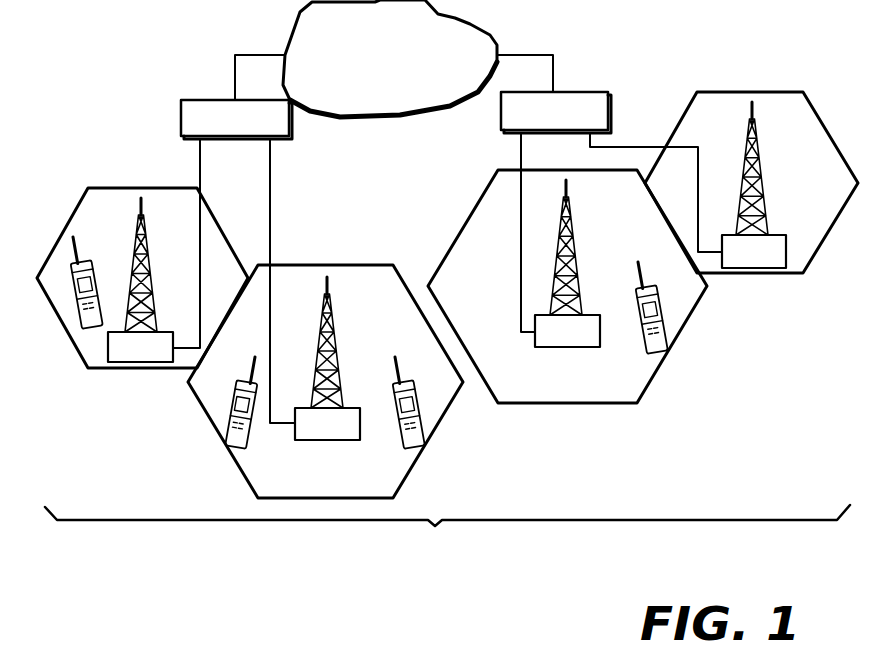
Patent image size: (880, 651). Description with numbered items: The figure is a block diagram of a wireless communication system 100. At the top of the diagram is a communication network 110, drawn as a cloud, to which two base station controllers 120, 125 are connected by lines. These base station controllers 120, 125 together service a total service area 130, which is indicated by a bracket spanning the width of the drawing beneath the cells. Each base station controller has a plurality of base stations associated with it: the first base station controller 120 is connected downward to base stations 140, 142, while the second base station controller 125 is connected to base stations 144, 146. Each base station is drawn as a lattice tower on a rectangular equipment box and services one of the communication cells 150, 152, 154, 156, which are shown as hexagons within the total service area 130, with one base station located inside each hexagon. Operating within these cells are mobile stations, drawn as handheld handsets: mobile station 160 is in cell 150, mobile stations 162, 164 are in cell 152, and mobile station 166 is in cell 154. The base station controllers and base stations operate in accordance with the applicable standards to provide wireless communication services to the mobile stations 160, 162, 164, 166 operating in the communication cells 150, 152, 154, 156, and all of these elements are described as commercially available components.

The wireless communication system 100 is at (774, 568).
The communication network 110 is at (395, 117).
The base station controller 120 is at (203, 98).
The base station controller 125 is at (587, 90).
The total service area 130 is at (447, 530).
The base station 140 is at (145, 232).
The base station 142 is at (332, 328).
The base station 144 is at (573, 212).
The base station 146 is at (762, 167).
The communication cell 150 is at (127, 186).
The communication cell 152 is at (345, 263).
The communication cell 154 is at (480, 203).
The communication cell 156 is at (770, 91).
The mobile station 160 is at (90, 268).
The mobile station 162 is at (242, 384).
The mobile station 164 is at (427, 373).
The mobile station 166 is at (633, 300).